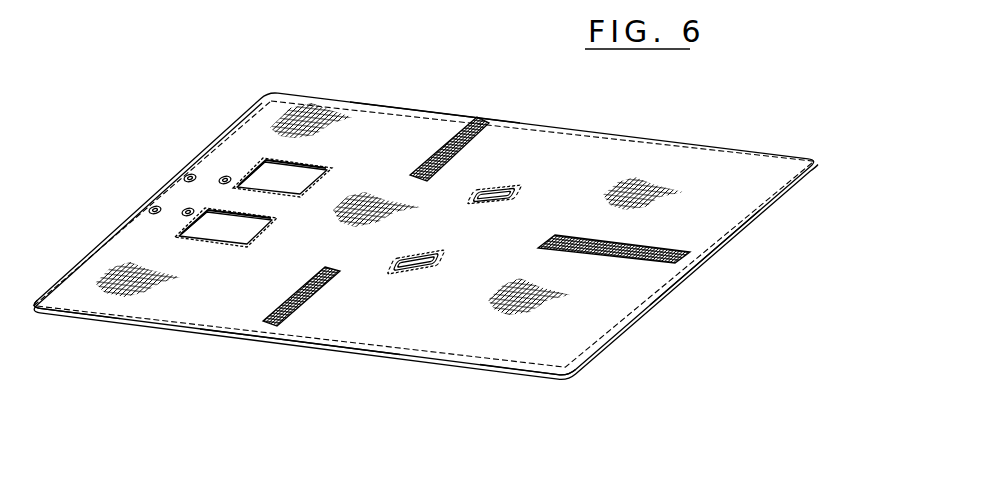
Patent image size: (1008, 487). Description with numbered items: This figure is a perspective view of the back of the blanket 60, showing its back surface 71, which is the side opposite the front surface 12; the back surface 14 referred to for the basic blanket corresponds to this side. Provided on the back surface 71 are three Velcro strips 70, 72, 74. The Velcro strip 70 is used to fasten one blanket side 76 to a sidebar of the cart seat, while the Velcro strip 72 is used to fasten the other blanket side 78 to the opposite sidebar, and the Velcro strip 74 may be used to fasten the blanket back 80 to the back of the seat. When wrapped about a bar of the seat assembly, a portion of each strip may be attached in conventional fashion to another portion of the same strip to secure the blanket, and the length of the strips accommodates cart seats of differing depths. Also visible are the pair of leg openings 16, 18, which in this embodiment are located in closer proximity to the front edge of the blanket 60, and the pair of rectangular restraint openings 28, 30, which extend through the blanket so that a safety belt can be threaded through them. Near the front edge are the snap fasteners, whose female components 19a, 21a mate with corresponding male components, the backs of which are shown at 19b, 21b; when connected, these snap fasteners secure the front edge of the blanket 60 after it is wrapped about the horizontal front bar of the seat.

The blanket 60 is at (160, 94).
The front surface 12 is at (49, 321).
The back surface 14 is at (543, 381).
The leg opening 16 is at (318, 161).
The leg opening 18 is at (219, 248).
The female component of snap fastener 19a is at (152, 209).
The male component of snap fastener 19b is at (183, 212).
The female component of snap fastener 21a is at (186, 177).
The male component of snap fastener 21b is at (225, 176).
The restraint opening 28 is at (500, 190).
The restraint opening 30 is at (412, 266).
The Velcro strip 70 is at (318, 292).
The back surface 71 is at (593, 148).
The Velcro strip 72 is at (465, 144).
The Velcro strip 74 is at (642, 258).
The blanket side 76 is at (350, 351).
The blanket side 78 is at (432, 108).
The blanket back 80 is at (702, 268).